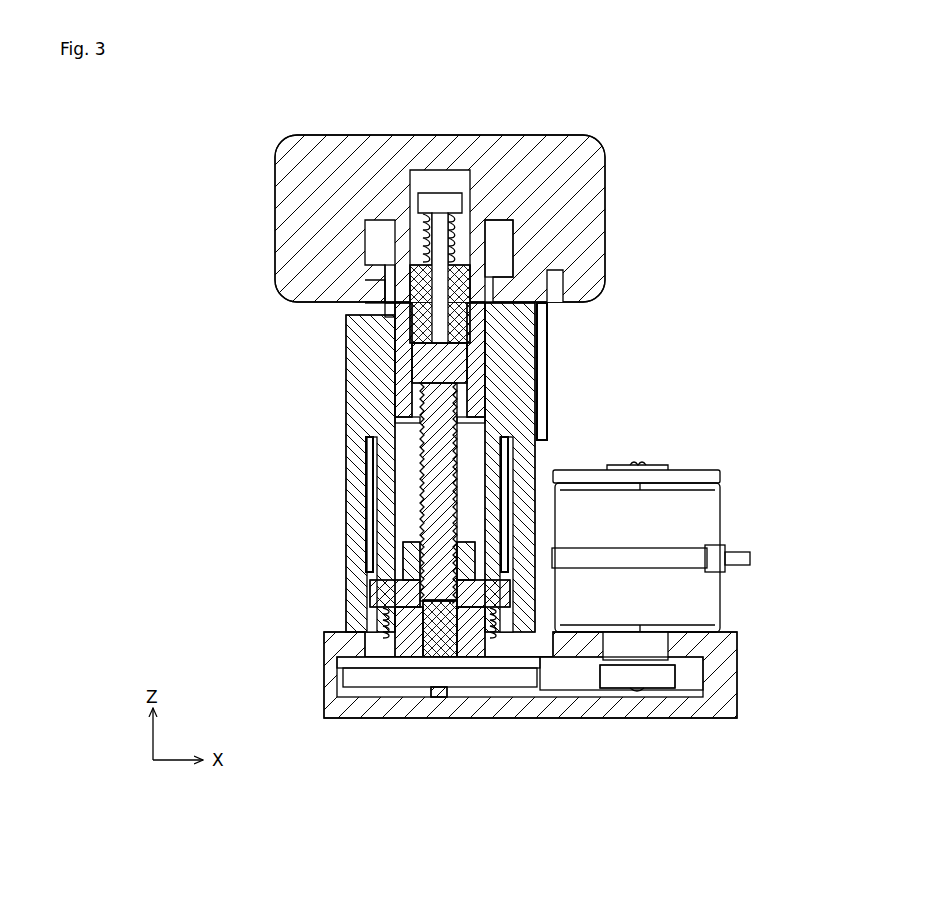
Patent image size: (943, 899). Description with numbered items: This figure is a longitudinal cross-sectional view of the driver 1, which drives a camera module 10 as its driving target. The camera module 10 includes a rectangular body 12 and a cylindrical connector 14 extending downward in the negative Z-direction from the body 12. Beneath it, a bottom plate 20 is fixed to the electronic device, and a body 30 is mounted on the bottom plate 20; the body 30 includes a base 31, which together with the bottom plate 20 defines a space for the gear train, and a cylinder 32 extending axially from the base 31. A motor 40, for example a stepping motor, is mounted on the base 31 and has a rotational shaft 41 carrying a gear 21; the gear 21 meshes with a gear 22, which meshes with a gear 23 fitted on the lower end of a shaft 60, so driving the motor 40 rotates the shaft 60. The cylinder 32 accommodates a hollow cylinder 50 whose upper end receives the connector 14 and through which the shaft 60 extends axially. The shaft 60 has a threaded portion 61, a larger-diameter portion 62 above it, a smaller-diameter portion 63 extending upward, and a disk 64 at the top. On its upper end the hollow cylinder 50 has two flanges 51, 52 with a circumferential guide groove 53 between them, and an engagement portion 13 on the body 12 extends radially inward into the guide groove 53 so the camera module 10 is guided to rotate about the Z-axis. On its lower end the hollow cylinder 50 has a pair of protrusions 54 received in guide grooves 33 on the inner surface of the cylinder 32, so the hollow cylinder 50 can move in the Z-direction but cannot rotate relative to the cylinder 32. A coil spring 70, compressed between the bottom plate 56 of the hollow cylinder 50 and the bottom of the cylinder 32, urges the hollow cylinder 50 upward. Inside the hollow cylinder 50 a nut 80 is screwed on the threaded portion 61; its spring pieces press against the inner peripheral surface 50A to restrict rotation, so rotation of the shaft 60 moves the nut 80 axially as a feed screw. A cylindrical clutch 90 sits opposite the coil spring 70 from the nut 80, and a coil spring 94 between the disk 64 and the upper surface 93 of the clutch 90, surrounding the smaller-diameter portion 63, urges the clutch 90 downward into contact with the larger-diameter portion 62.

The driver 1 is at (742, 72).
The camera module 10 is at (625, 204).
The body 12 is at (278, 206).
The engagement portion 13 is at (370, 307).
The connector 14 is at (543, 346).
The bottom plate 20 is at (403, 688).
The gear 21 is at (670, 690).
The gear 22 is at (558, 692).
The gear 23 is at (468, 680).
The body 30 is at (278, 536).
The base 31 is at (740, 651).
The cylinder 32 is at (356, 490).
The guide grooves 33 is at (372, 528).
The motor 40 is at (722, 521).
The rotational shaft 41 is at (636, 694).
The hollow cylinder 50 is at (400, 380).
The inner peripheral surface 50A is at (503, 452).
The flange 51 is at (389, 263).
The flange 52 is at (372, 330).
The guide groove 53 is at (372, 293).
The protrusions 54 is at (375, 592).
The bottom plate 56 is at (372, 698).
The shaft 60 is at (457, 404).
The threaded portion 61 is at (364, 460).
The larger-diameter portion 62 is at (470, 356).
The smaller-diameter portion 63 is at (445, 212).
The disk 64 is at (441, 194).
The coil spring 70 is at (400, 638).
The nut 80 is at (474, 528).
The clutch 90 is at (556, 292).
The upper surface 93 is at (500, 246).
The coil spring 94 is at (427, 226).